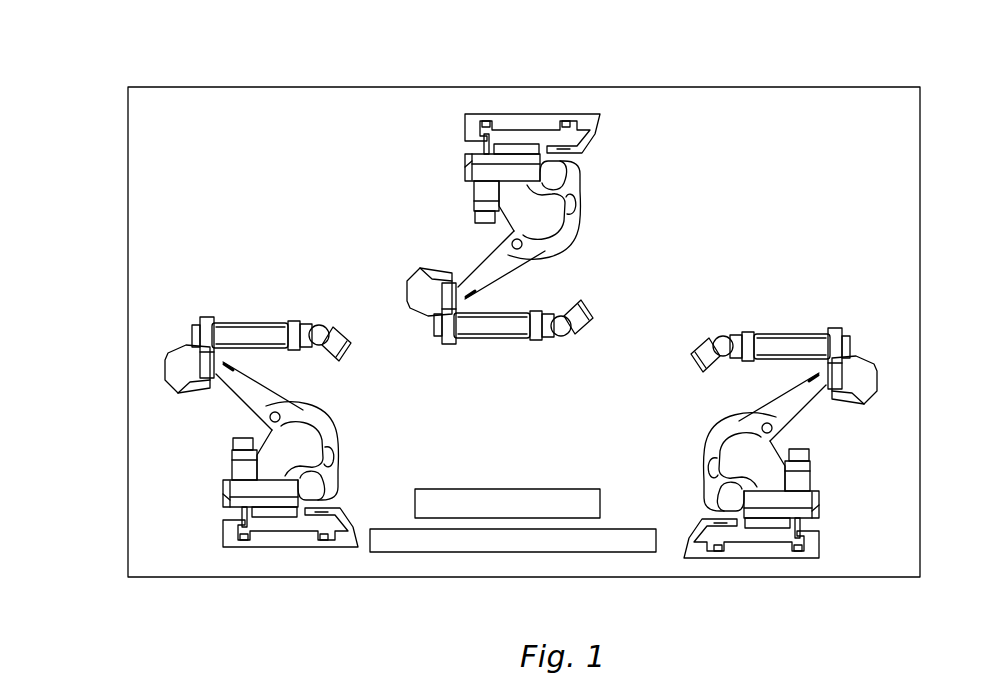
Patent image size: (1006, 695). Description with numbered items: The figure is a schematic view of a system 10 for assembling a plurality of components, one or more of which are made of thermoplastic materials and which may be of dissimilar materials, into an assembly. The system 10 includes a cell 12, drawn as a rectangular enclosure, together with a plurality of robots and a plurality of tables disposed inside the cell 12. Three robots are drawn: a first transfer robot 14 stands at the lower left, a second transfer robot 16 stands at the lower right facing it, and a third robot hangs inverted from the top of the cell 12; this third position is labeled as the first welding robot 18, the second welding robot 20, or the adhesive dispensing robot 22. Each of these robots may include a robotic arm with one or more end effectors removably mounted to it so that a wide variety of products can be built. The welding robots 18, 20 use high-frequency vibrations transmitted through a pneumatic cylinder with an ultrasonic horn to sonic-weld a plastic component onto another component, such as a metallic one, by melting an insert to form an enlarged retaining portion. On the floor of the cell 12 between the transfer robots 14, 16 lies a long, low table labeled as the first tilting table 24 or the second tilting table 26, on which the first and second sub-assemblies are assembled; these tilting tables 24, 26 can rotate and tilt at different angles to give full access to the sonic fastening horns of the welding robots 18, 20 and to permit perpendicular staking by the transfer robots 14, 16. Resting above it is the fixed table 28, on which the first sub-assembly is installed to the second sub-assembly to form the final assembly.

The system 10 is at (845, 57).
The cell 12 is at (128, 217).
The first transfer robot 14 is at (158, 423).
The second transfer robot 16 is at (857, 320).
The first welding robot 18 is at (448, 190).
The second welding robot 20 is at (448, 190).
The adhesive dispensing robot 22 is at (445, 128).
The first tilting table 24 is at (503, 590).
The second tilting table 26 is at (446, 552).
The fixed table 28 is at (534, 489).